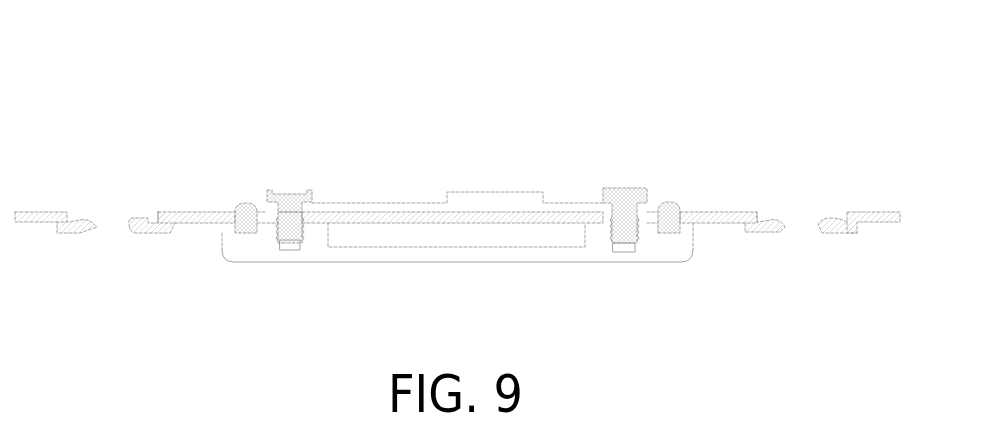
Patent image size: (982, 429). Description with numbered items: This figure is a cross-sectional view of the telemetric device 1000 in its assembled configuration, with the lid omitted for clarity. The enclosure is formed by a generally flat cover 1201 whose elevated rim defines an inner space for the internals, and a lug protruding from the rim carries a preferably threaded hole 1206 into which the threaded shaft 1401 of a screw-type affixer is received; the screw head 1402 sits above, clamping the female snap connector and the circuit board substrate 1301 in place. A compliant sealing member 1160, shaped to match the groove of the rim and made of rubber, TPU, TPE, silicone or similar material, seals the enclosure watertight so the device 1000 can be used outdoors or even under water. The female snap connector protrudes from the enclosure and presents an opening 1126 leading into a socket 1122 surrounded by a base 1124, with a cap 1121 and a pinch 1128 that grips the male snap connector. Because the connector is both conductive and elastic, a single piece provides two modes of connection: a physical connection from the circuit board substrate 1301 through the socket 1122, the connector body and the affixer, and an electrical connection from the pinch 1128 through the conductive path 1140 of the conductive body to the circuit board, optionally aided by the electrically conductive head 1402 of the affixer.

The telemetric device 1000 is at (494, 163).
The substrate 1301 is at (380, 203).
The cover 1201 is at (454, 252).
The sealing member 1160 is at (247, 203).
The head 1402 is at (290, 196).
The shaft 1401 is at (290, 235).
The conductive path 1140 is at (651, 217).
The hole 1206 is at (626, 237).
The opening 1126 is at (110, 210).
The socket 1122 is at (110, 245).
The cap 1121 is at (765, 230).
The base 1124 is at (852, 215).
The pinch 1128 is at (822, 226).